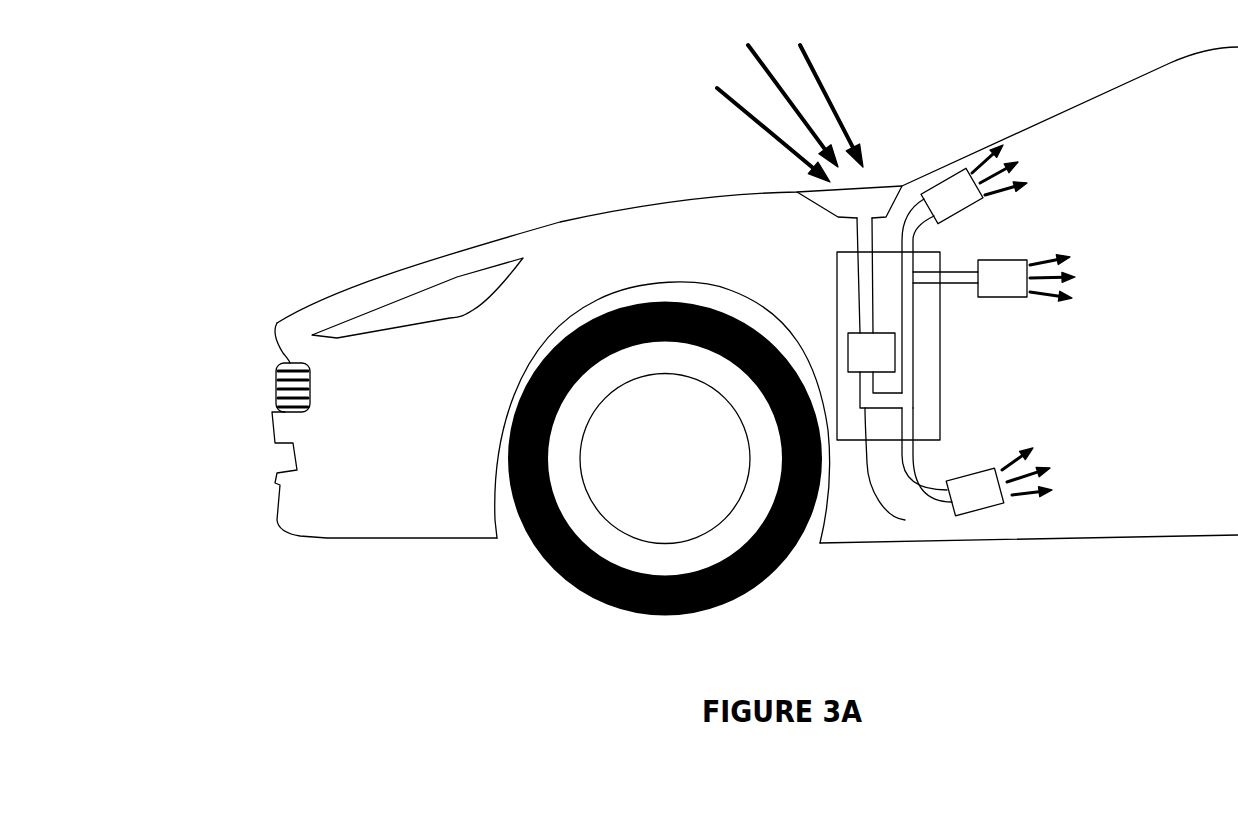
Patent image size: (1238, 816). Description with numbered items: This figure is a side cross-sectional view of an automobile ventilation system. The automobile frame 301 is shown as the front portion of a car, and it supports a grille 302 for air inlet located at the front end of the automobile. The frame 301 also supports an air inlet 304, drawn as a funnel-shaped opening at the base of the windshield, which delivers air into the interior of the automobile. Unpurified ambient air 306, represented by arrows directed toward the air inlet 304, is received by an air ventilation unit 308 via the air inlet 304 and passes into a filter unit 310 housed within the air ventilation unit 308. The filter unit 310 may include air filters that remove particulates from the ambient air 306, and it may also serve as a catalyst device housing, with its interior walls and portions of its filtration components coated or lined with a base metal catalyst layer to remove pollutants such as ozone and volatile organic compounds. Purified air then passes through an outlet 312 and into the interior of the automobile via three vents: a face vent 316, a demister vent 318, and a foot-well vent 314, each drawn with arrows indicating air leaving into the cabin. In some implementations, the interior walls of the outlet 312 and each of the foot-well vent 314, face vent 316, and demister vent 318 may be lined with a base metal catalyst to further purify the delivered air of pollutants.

The automobile frame 301 is at (387, 270).
The grille 302 is at (277, 387).
The air inlet 304 is at (874, 186).
The unpurified ambient air 306 is at (770, 137).
The air ventilation unit 308 is at (837, 298).
The filter unit 310 is at (897, 353).
The outlet 312 is at (898, 471).
The foot-well vent 314 is at (968, 470).
The face vent 316 is at (1000, 297).
The demister vent 318 is at (963, 217).